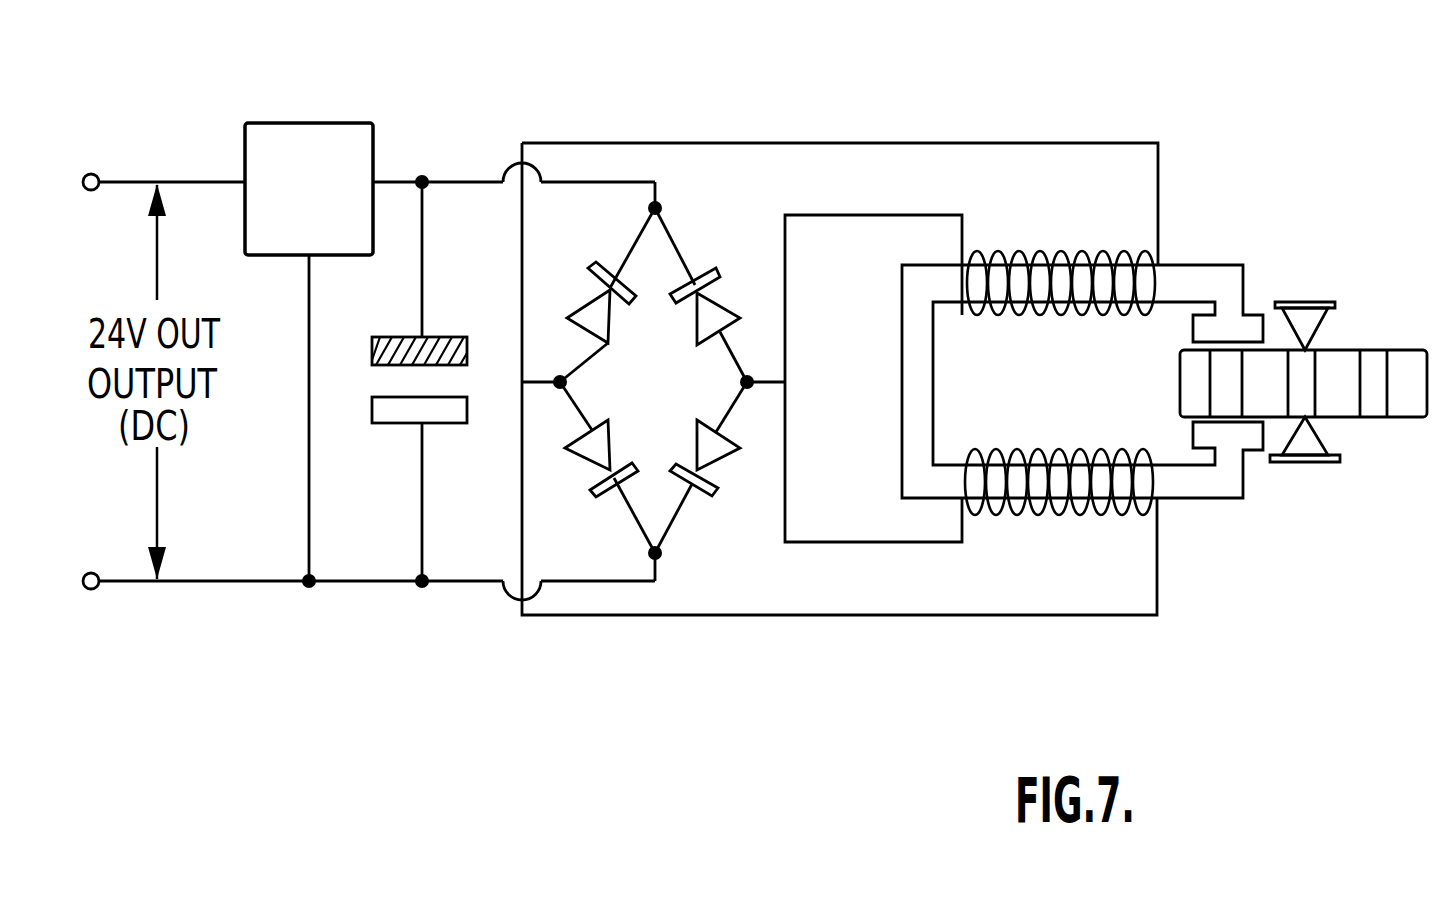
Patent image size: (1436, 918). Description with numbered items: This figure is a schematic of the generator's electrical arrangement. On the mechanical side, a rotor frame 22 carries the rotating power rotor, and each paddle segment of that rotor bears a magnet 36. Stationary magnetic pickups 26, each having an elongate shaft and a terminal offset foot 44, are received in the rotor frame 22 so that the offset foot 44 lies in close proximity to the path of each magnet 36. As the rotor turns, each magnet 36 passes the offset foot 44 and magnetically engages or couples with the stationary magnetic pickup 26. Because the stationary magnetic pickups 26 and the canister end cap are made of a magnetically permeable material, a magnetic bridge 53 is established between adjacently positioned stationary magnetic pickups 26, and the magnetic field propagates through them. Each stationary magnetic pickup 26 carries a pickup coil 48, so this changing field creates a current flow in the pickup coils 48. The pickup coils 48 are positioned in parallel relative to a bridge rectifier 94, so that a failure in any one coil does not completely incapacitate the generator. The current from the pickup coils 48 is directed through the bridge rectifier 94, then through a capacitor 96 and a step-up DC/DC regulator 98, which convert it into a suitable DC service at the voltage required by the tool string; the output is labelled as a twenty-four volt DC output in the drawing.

The step-up DC/DC regulator 98 is at (373, 133).
The capacitor 96 is at (460, 378).
The bridge rectifier 94 is at (677, 397).
The magnetic bridge 53 is at (917, 385).
The stationary magnetic pickup 26 is at (1183, 280).
The pickup coil 48 is at (1023, 265).
The rotor frame 22 is at (1357, 328).
The magnet 36 is at (1215, 387).
The offset foot 44 is at (1250, 327).